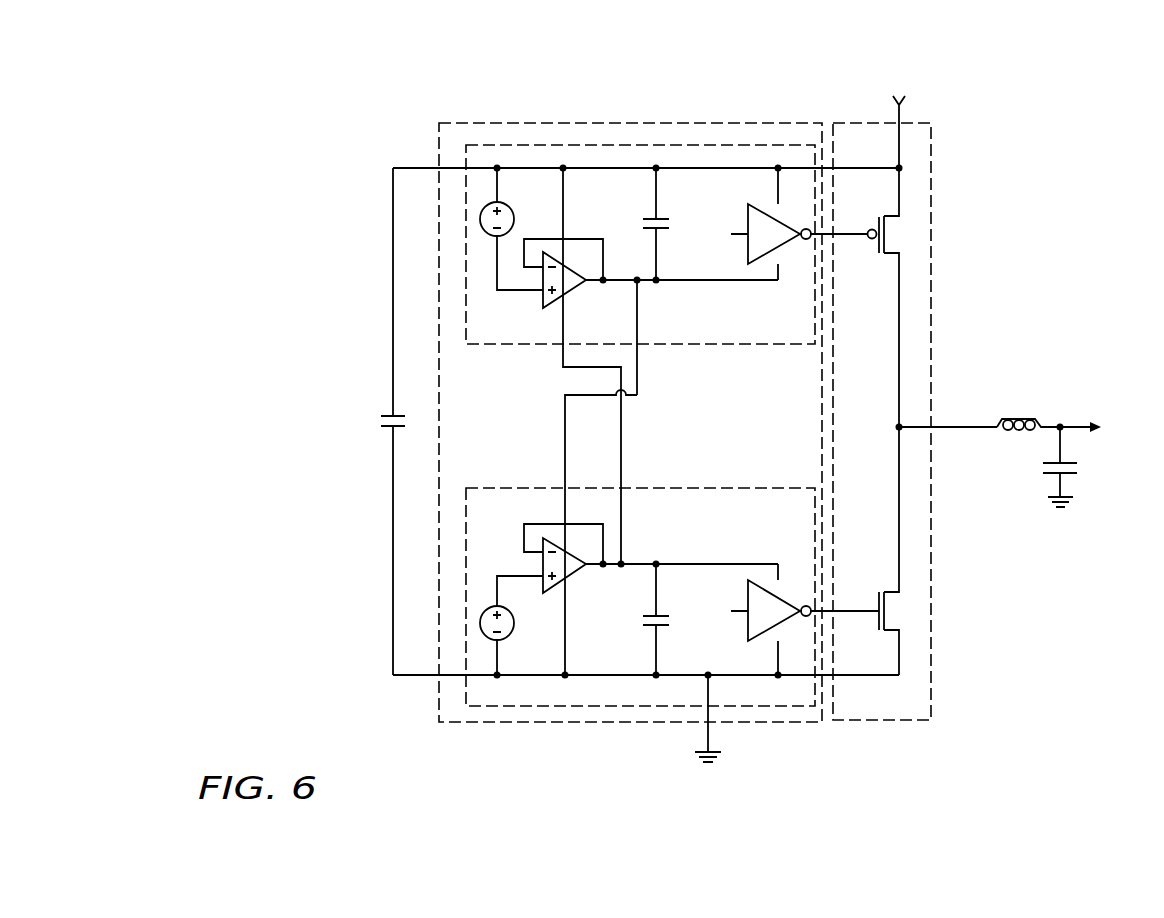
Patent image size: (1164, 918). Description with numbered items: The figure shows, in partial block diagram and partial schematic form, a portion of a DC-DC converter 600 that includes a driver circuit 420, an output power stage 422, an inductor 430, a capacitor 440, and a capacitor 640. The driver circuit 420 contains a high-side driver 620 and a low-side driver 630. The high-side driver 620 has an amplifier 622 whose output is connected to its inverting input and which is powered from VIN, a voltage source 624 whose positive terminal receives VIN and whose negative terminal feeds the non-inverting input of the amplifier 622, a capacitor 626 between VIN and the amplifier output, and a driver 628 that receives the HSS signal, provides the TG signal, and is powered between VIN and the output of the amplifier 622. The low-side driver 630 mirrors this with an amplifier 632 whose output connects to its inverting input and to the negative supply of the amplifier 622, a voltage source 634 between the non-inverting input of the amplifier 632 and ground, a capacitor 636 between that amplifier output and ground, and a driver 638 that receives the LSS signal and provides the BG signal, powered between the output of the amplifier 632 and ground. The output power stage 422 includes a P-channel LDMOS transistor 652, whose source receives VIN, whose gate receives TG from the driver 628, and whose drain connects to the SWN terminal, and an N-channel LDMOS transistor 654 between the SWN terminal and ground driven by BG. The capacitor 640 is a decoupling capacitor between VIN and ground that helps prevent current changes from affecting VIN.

The DC-DC converter 600 is at (310, 105).
The driver circuit 420 is at (612, 123).
The output power stage 422 is at (862, 122).
The high-side driver 620 is at (528, 345).
The amplifier 622 is at (543, 300).
The voltage source 624 is at (511, 212).
The capacitor 626 is at (643, 219).
The driver 628 is at (748, 250).
The low-side driver 630 is at (528, 488).
The amplifier 632 is at (543, 563).
The voltage source 634 is at (510, 637).
The capacitor 636 is at (645, 616).
The driver 638 is at (748, 598).
The capacitor 640 is at (378, 415).
The P-channel LDMOS transistor 652 is at (890, 256).
The N-channel LDMOS transistor 654 is at (890, 634).
The inductor 430 is at (1022, 418).
The capacitor 440 is at (1078, 474).